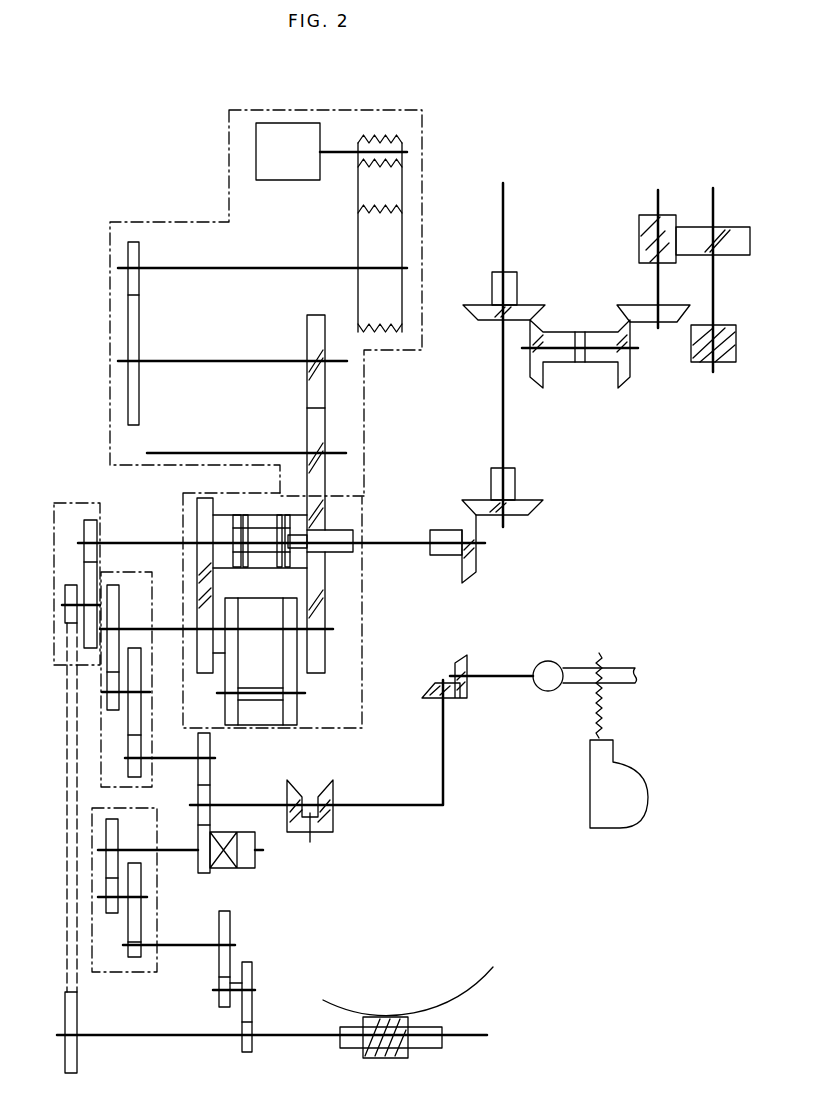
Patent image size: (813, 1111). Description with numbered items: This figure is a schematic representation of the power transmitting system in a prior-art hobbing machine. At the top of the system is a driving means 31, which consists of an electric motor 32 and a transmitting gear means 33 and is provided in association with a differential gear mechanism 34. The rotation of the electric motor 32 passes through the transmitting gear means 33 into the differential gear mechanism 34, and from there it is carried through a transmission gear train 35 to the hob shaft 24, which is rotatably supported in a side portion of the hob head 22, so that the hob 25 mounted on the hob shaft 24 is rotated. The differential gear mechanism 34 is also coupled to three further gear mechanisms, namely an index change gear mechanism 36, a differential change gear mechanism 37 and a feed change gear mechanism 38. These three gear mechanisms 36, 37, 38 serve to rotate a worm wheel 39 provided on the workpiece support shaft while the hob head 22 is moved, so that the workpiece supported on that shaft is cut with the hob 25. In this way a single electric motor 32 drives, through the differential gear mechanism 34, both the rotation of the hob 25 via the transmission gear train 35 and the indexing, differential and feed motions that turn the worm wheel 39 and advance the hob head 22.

The hob head 22 is at (637, 772).
The hob shaft 24 is at (713, 279).
The hob 25 is at (745, 313).
The driving means 31 is at (328, 110).
The electric motor 32 is at (282, 123).
The transmitting gear means 33 is at (320, 390).
The differential gear mechanism 34 is at (362, 589).
The transmission gear train 35 is at (516, 481).
The index change gear mechanism 36 is at (54, 530).
The differential change gear mechanism 37 is at (101, 718).
The feed change gear mechanism 38 is at (92, 835).
The worm wheel 39 is at (485, 980).